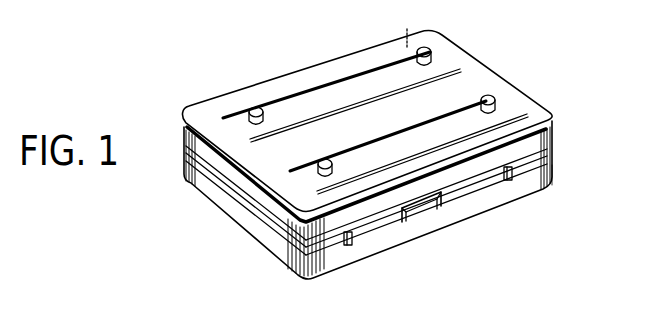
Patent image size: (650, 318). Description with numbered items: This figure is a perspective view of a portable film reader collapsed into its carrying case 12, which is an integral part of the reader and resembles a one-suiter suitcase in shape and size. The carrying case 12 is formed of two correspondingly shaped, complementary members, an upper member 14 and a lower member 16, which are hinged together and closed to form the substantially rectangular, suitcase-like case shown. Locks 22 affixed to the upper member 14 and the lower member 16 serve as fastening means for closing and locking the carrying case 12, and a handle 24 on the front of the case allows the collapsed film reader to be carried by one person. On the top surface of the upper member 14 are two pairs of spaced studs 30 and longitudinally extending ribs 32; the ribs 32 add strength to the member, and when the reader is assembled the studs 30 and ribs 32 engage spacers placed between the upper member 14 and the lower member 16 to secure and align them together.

The carrying case 12 is at (478, 86).
The upper member 14 is at (553, 118).
The lower member 16 is at (549, 171).
The locks 22 is at (350, 246).
The handle 24 is at (431, 215).
The studs 30 is at (250, 108).
The ribs 32 is at (320, 113).